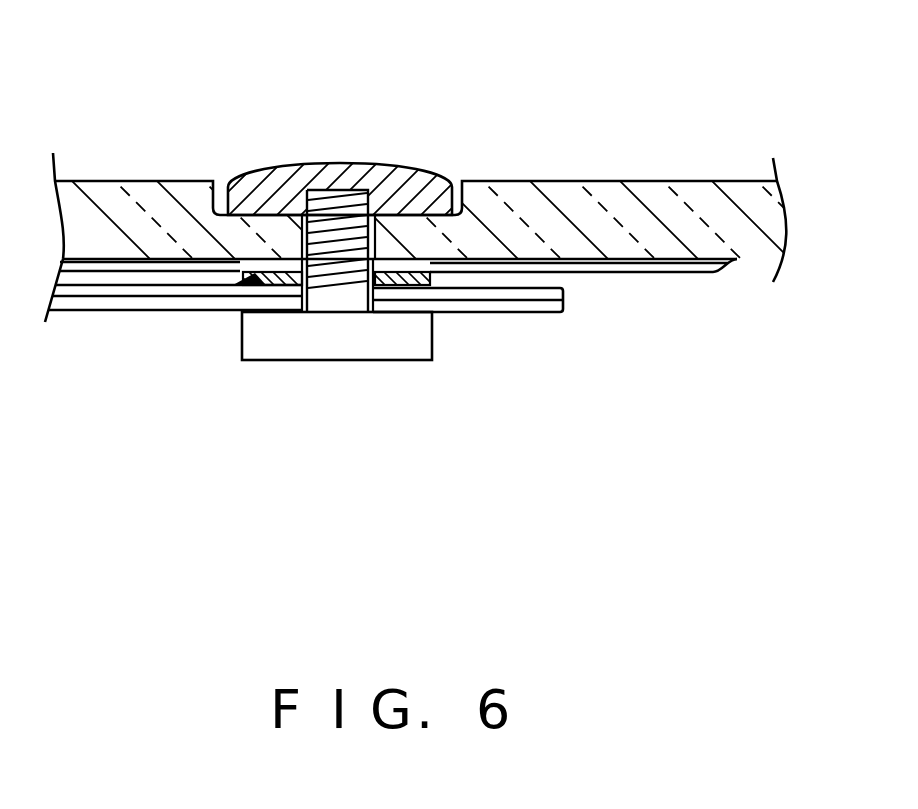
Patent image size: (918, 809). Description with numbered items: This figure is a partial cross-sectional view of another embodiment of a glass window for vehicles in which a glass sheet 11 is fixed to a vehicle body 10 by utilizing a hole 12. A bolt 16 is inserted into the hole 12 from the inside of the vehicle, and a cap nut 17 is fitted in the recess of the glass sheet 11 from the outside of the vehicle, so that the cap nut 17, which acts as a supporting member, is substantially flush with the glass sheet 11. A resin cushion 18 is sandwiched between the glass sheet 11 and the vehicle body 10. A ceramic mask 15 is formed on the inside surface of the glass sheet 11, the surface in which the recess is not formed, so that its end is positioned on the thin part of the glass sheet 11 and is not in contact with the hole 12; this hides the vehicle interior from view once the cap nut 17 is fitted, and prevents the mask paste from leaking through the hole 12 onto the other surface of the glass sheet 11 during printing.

The vehicle body 10 is at (92, 310).
The glass sheet 11 is at (608, 183).
The hole 12 is at (300, 146).
The ceramic mask 15 is at (640, 272).
The bolt 16 is at (433, 360).
The cap nut 17 is at (362, 165).
The resin cushion 18 is at (235, 283).